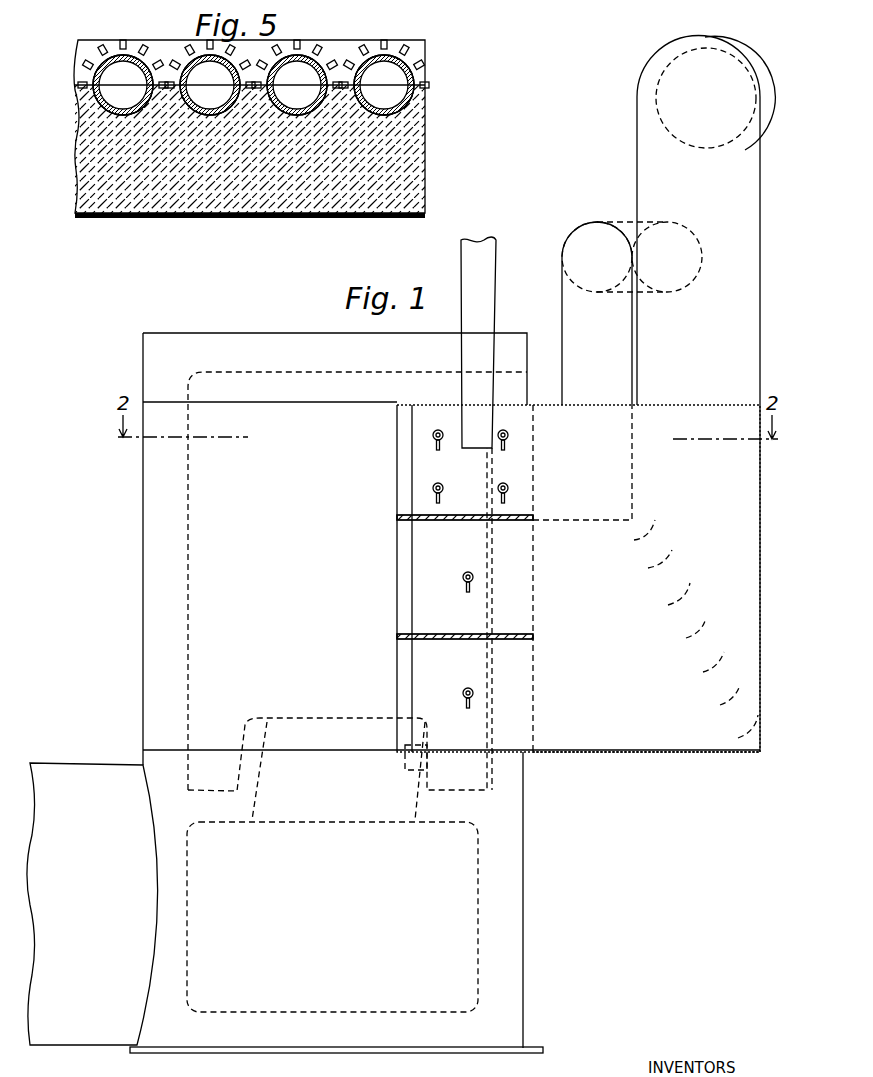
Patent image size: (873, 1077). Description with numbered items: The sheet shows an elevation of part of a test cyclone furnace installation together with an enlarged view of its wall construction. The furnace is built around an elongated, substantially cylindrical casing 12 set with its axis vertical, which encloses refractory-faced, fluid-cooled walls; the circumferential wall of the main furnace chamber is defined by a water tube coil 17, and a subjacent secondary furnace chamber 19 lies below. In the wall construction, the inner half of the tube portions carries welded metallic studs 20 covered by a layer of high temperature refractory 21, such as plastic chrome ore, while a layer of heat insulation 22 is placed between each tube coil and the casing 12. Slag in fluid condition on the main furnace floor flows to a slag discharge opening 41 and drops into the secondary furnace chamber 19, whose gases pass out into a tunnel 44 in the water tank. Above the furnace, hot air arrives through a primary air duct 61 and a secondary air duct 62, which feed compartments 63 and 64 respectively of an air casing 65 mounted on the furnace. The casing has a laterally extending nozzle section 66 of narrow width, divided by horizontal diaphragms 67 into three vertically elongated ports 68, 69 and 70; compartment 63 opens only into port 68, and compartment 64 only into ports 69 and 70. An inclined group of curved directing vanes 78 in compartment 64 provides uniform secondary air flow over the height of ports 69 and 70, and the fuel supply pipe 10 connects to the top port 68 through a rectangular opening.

In FIG. 1, the fuel supply pipe 10 is at (488, 298).
In FIG. 5, the casing 12 is at (213, 214).
In FIG. 1, the casing 12 is at (143, 545).
In FIG. 5, the water tube coil 17 is at (410, 108).
In FIG. 1, the secondary furnace chamber 19 is at (385, 1012).
In FIG. 5, the metallic studs 20 is at (385, 47).
In FIG. 5, the high temperature refractory 21 is at (335, 47).
In FIG. 5, the heat insulation 22 is at (285, 200).
In FIG. 1, the slag discharge opening 41 is at (430, 787).
In FIG. 1, the tunnel 44 is at (78, 1032).
In FIG. 1, the primary air duct 61 is at (562, 322).
In FIG. 1, the secondary air duct 62 is at (637, 183).
In FIG. 1, the compartment 63 is at (582, 462).
In FIG. 1, the compartment 64 is at (633, 648).
In FIG. 1, the air casing 65 is at (690, 755).
In FIG. 1, the nozzle section 66 is at (425, 553).
In FIG. 1, the horizontal diaphragms 67 is at (505, 514).
In FIG. 1, the port 68 is at (470, 466).
In FIG. 1, the port 69 is at (452, 580).
In FIG. 1, the port 70 is at (452, 692).
In FIG. 1, the curved directing vanes 78 is at (692, 582).